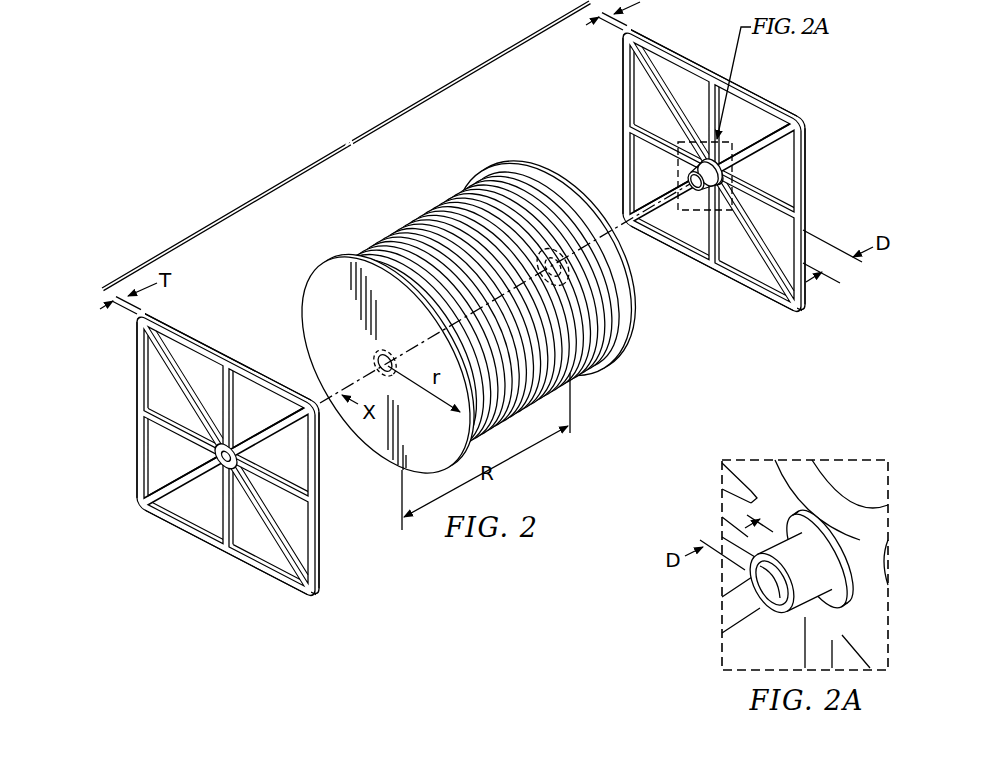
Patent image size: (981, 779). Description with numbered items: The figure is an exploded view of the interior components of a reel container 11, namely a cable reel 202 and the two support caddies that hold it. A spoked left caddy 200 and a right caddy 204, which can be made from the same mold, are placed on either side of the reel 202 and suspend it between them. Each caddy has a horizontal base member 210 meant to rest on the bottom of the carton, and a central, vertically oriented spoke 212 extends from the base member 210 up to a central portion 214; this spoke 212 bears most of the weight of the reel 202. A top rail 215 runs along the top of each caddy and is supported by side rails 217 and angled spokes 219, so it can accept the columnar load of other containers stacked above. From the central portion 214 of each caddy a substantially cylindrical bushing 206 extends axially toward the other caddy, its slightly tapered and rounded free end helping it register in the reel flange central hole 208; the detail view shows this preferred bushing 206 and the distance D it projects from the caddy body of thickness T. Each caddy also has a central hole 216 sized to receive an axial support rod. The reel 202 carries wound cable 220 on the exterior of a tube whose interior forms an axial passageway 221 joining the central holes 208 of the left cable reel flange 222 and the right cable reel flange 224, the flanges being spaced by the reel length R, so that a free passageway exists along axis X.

In FIG. 2, the container 11 is at (348, 142).
In FIG. 2, the left caddy 200 is at (275, 580).
In FIG. 2, the cable reel 202 is at (480, 315).
In FIG. 2, the right caddy 204 is at (809, 117).
In FIG. 2, the bushing 206 is at (688, 181).
In FIG. 2A, the bushing 206 is at (780, 617).
In FIG. 2, the reel flange central hole 208 is at (380, 362).
In FIG. 2, the horizontal base member 210 is at (223, 553).
In FIG. 2, the central vertically oriented spoke 212 is at (217, 523).
In FIG. 2, the central portion 214 is at (233, 433).
In FIG. 2, the top rail 215 is at (223, 350).
In FIG. 2, the central hole 216 is at (212, 447).
In FIG. 2, the side rails 217 is at (133, 467).
In FIG. 2, the angled spokes 219 is at (172, 353).
In FIG. 2, the wound cable 220 is at (408, 243).
In FIG. 2, the axial passageway 221 is at (410, 322).
In FIG. 2, the left cable reel flange 222 is at (323, 282).
In FIG. 2, the right cable reel flange 224 is at (600, 373).